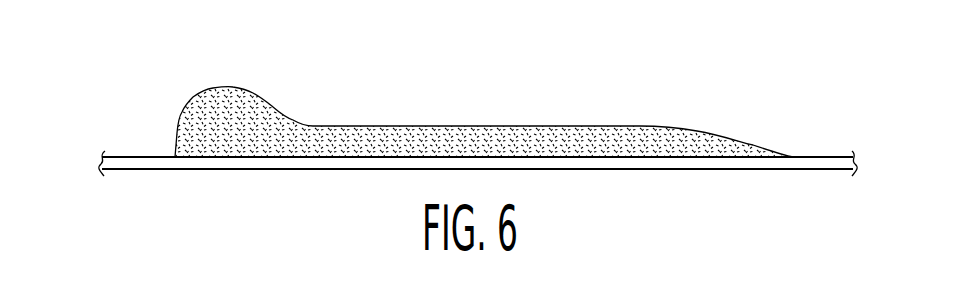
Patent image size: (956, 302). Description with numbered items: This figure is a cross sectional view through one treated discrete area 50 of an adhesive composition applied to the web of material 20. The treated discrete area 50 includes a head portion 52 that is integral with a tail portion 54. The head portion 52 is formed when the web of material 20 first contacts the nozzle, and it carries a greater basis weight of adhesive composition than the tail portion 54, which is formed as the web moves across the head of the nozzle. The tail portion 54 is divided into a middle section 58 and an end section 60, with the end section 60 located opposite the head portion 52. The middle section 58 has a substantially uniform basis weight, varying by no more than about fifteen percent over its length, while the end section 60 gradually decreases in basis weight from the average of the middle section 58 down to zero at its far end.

The web of material 20 is at (838, 157).
The treated discrete area 50 is at (156, 88).
The head portion 52 is at (230, 88).
The tail portion 54 is at (500, 124).
The middle section 58 is at (580, 158).
The end section 60 is at (747, 158).